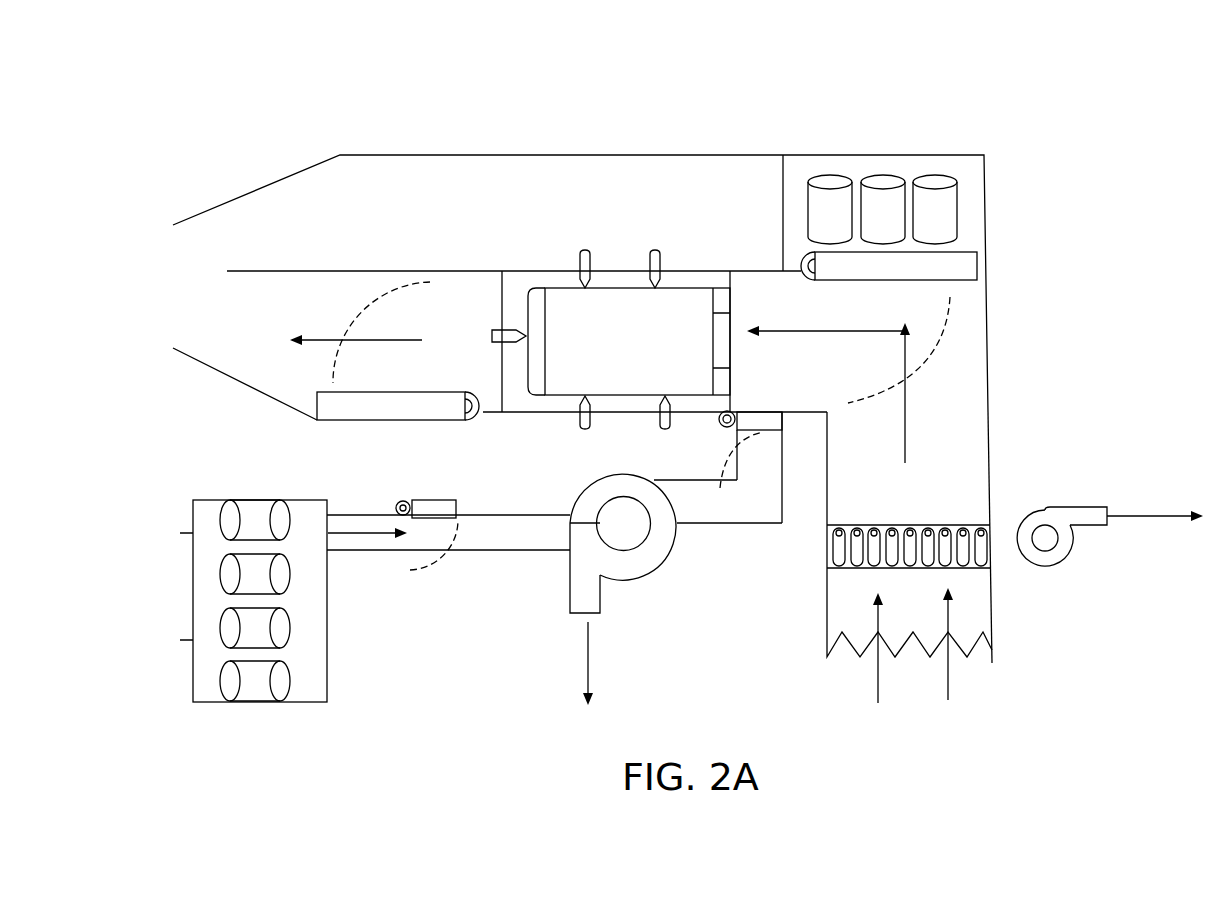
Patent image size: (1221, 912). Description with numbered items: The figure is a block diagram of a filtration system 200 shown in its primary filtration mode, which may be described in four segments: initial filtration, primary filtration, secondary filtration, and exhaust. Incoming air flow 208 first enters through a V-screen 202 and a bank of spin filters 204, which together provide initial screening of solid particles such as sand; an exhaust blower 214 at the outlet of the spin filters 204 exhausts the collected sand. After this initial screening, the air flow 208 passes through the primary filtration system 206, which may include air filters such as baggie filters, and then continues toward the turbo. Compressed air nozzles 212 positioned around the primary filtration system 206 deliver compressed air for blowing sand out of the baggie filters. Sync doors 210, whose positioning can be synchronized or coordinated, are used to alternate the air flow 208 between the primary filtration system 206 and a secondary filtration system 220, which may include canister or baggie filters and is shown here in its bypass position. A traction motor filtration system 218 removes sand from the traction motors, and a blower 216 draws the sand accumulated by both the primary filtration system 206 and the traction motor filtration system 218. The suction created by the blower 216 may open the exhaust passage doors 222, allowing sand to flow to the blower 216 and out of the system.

The filtration system 200 is at (349, 52).
The V-screen 202 is at (975, 648).
The spin filters 204 is at (898, 525).
The primary filtration system 206 is at (677, 322).
The air flow 208 is at (383, 338).
The sync doors 210 is at (365, 392).
The compressed air nozzles 212 is at (590, 253).
The exhaust blower 214 is at (1048, 562).
The blower 216 is at (580, 585).
The traction motor filtration system 218 is at (328, 677).
The secondary filtration system 220 is at (958, 180).
The exhaust passage doors 222 is at (447, 498).